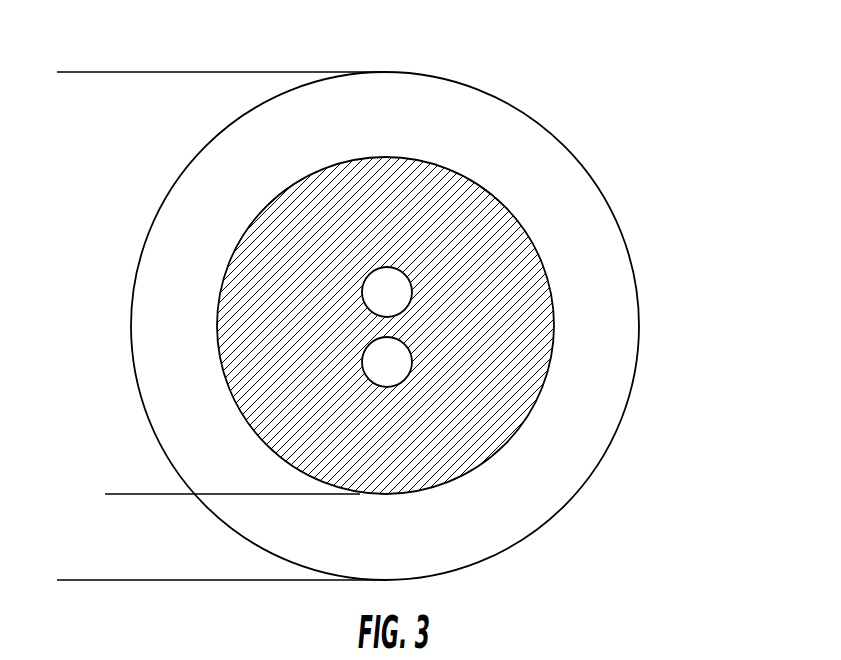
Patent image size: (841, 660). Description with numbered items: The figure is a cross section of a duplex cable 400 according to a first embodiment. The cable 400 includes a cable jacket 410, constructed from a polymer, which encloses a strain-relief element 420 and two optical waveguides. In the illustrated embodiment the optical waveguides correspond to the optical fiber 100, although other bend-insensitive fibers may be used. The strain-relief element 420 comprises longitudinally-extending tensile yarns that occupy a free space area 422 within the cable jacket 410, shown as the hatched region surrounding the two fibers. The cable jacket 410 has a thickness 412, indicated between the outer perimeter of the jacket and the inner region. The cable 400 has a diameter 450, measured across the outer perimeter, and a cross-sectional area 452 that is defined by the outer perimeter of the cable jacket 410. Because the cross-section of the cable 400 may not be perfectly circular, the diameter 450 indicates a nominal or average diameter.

The duplex cable 400 is at (312, 63).
The cable jacket 410 is at (498, 127).
The strain-relief element 420 is at (493, 225).
The optical fiber 100 is at (387, 362).
The free space area 422 is at (517, 375).
The cross-sectional area 452 is at (558, 440).
The diameter 450 is at (77, 72).
The thickness 412 is at (135, 494).